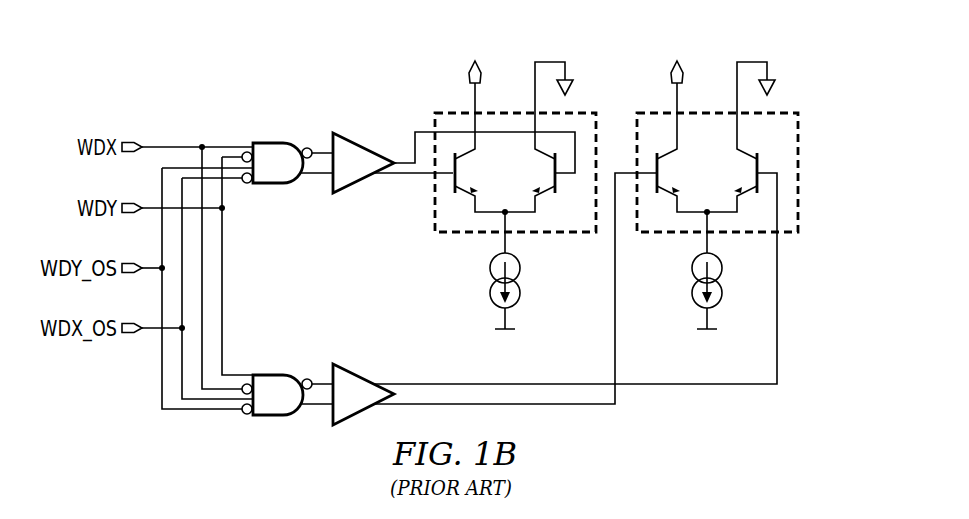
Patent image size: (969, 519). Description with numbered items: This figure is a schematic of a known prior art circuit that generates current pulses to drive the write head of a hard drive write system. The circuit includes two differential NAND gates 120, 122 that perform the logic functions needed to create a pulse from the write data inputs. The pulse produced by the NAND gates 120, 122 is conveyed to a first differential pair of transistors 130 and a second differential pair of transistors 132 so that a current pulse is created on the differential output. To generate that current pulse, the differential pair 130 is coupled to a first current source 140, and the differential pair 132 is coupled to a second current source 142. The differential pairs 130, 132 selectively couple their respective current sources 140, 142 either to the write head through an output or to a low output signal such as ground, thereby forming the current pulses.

The differential NAND gate 120 is at (278, 142).
The differential NAND gate 122 is at (278, 416).
The differential pair of transistors 130 is at (428, 214).
The differential pair of transistors 132 is at (806, 152).
The first current source 140 is at (491, 291).
The second current source 142 is at (693, 291).